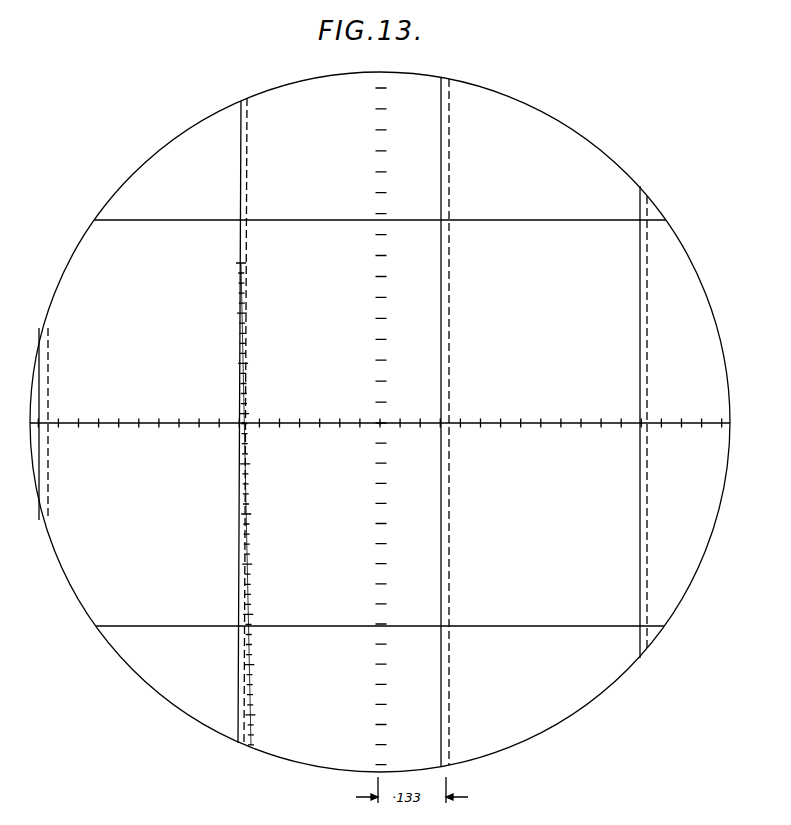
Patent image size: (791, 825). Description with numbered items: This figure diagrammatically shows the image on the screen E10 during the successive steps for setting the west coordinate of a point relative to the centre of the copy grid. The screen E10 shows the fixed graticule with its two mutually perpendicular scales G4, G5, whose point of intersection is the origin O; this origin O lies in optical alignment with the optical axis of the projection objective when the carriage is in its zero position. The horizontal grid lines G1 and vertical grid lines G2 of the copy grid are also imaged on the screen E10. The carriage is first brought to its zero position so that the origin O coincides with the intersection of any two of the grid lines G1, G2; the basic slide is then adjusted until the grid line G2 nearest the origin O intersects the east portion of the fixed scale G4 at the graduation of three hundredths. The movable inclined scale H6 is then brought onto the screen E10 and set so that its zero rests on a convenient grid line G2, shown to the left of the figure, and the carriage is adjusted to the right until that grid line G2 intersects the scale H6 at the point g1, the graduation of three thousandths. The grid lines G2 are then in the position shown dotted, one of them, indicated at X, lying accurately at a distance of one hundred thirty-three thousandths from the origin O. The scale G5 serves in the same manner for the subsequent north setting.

The screen E10 is at (596, 152).
The grid lines G1 is at (506, 641).
The grid lines G2 is at (466, 341).
The fixed scale G4 is at (299, 425).
The fixed scale G5 is at (379, 475).
The origin O is at (380, 423).
The grid line X is at (446, 522).
The inclined scale H6 is at (250, 585).
The point g1 is at (243, 414).